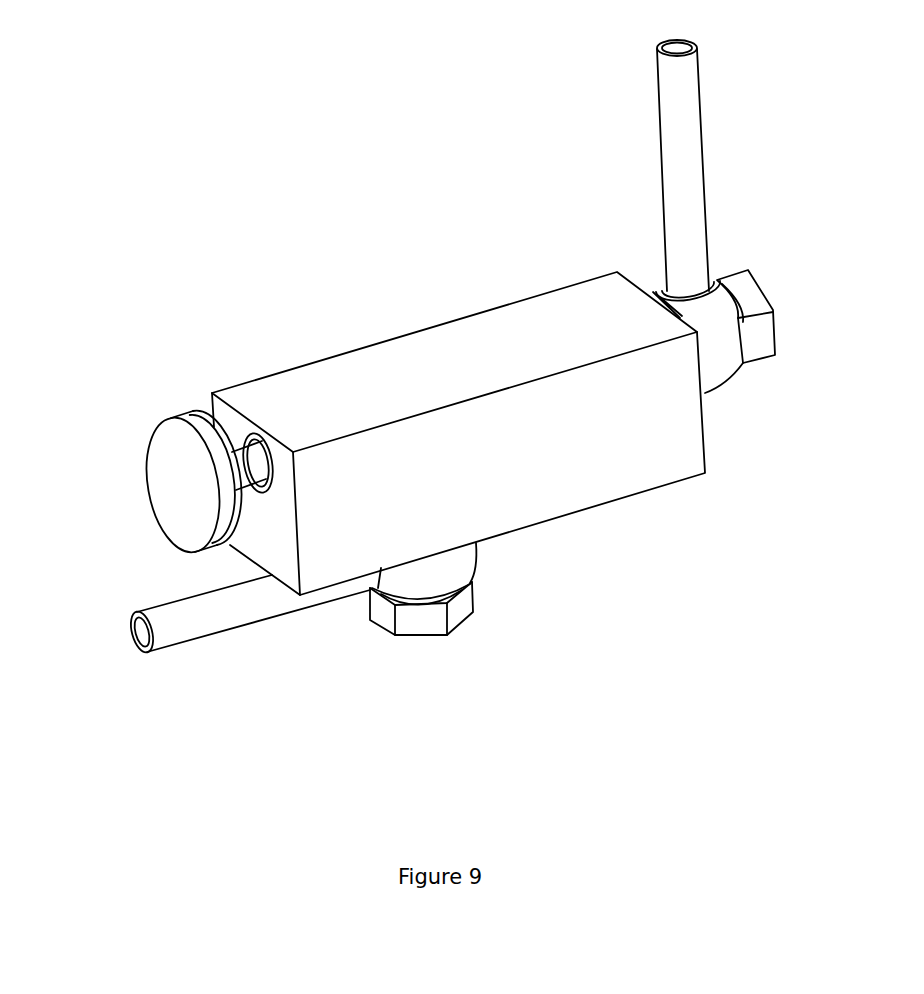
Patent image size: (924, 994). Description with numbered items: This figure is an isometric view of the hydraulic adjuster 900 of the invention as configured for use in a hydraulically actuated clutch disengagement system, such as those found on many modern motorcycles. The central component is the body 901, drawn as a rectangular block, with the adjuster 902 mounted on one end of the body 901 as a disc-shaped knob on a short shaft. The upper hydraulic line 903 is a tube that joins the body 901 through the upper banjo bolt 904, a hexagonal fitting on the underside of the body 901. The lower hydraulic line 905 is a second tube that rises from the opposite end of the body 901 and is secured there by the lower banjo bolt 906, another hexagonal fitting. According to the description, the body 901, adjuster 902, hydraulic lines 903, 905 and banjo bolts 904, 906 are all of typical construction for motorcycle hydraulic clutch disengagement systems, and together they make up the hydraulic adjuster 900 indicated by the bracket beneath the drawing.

The hydraulic adjuster 900 is at (833, 645).
The body 901 is at (428, 365).
The adjuster 902 is at (183, 485).
The upper hydraulic line 903 is at (185, 628).
The upper banjo bolt 904 is at (460, 605).
The lower hydraulic line 905 is at (678, 143).
The lower banjo bolt 906 is at (753, 298).